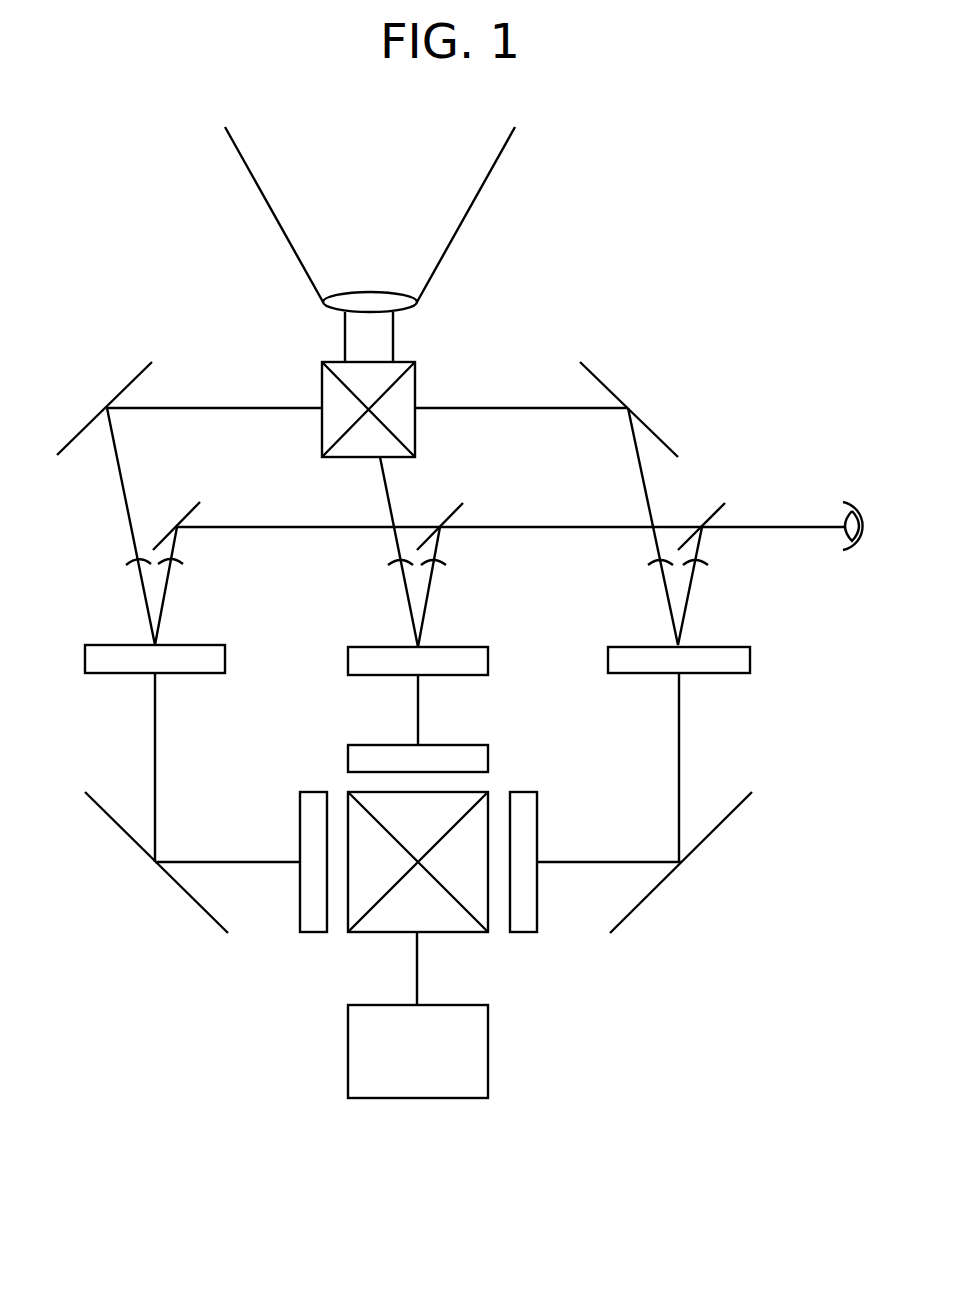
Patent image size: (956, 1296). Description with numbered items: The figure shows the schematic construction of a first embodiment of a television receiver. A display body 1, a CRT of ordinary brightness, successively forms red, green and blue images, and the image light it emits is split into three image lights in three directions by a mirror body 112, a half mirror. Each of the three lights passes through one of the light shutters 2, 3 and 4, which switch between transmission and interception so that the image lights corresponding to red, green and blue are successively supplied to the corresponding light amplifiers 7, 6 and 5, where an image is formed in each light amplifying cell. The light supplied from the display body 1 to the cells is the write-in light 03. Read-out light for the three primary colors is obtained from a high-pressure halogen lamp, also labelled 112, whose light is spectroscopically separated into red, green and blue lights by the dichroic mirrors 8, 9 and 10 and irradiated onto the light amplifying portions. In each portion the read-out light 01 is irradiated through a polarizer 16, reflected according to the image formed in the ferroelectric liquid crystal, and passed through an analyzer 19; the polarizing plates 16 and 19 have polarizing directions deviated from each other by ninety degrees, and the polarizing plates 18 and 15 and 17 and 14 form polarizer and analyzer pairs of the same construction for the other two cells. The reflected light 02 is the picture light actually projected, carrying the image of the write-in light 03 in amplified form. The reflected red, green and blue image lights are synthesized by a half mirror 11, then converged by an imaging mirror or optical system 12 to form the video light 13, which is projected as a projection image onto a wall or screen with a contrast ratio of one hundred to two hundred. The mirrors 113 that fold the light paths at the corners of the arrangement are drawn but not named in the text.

The display body 1 is at (442, 1088).
The light shutter 2 is at (530, 842).
The light shutter 3 is at (373, 760).
The light shutter 4 is at (310, 853).
The light amplifier 5 is at (110, 658).
The light amplifier 6 is at (368, 660).
The light amplifier 7 is at (640, 660).
The dichroic mirror 8 is at (721, 506).
The dichroic mirror 9 is at (458, 506).
The dichroic mirror 10 is at (199, 506).
The half mirror 11 is at (397, 400).
The optical system 12 is at (368, 302).
The video light 13 is at (425, 172).
The polarizing plate 14 is at (701, 566).
The polarizing plate 15 is at (438, 566).
The polarizer 16 is at (180, 566).
The polarizing plate 17 is at (653, 566).
The polarizing plate 18 is at (397, 566).
The analyzer 19 is at (130, 566).
The read-out light 01 is at (160, 608).
The image light 02 is at (143, 610).
The write-in light 03 is at (157, 788).
The mirror body 112 is at (408, 918).
The mirror 113 is at (115, 395).